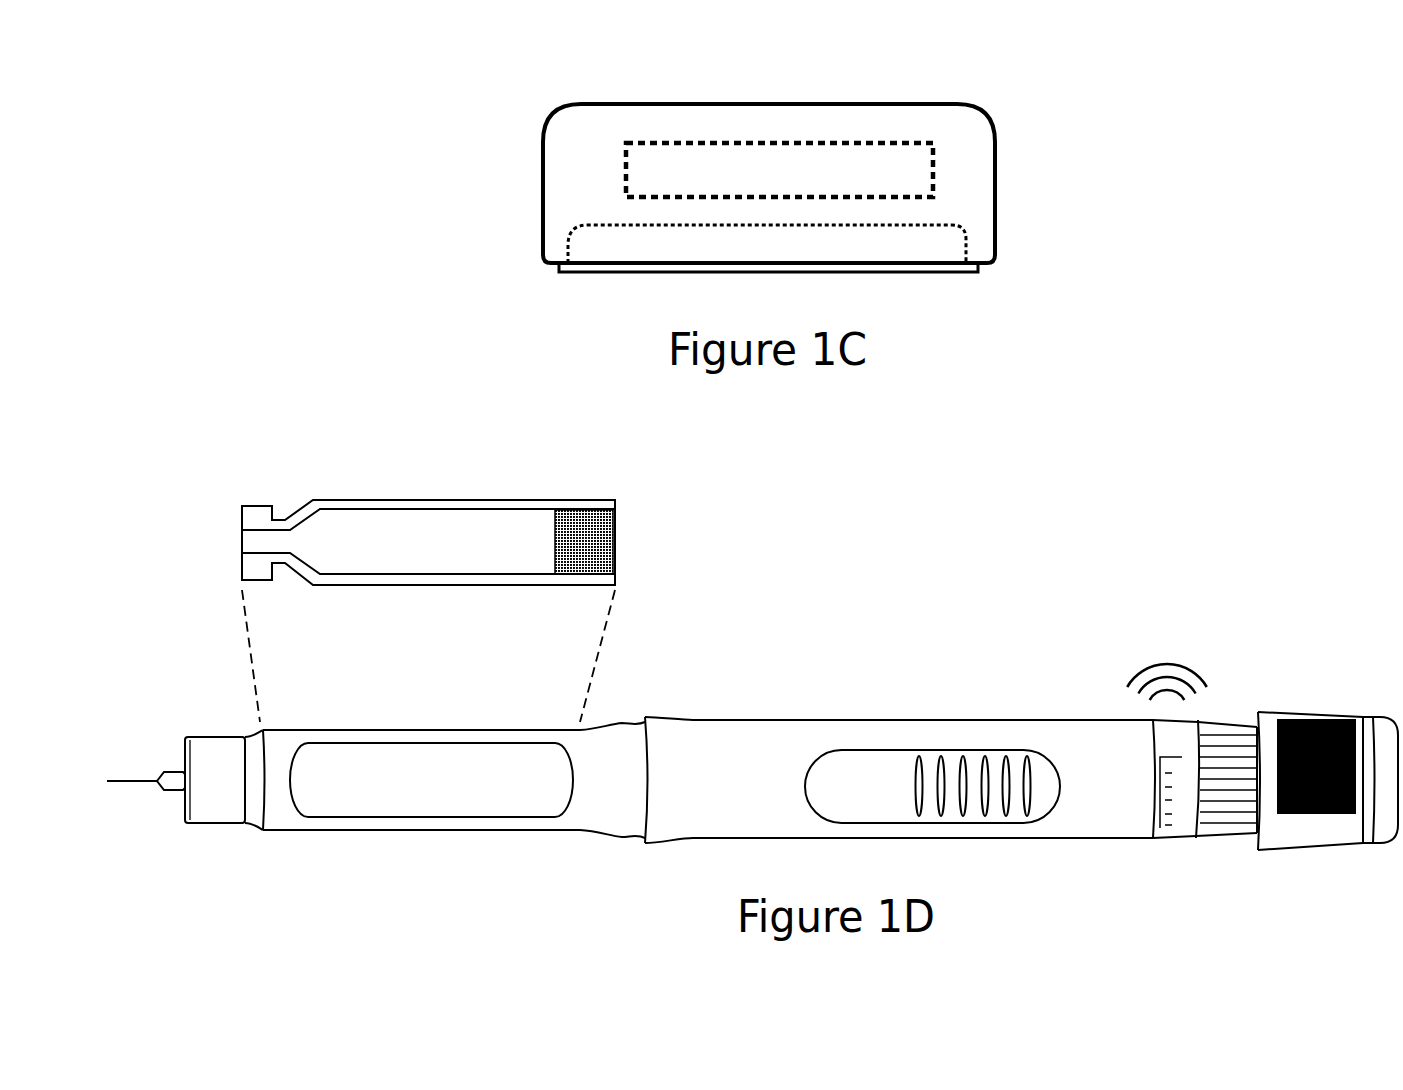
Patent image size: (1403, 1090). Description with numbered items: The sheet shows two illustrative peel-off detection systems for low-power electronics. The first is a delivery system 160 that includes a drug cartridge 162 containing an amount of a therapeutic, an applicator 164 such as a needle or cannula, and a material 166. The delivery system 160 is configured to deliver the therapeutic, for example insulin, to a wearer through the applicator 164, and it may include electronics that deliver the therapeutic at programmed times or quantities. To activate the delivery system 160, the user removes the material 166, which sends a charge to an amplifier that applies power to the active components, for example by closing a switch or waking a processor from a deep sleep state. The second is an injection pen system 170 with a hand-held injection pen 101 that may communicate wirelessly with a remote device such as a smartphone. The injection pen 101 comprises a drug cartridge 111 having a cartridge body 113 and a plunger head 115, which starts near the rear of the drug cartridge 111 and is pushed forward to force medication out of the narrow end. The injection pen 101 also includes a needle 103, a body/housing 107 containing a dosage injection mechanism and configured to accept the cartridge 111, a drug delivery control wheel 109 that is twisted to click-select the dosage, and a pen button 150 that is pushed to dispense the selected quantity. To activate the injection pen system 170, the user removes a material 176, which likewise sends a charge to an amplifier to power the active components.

In FIG. 1C, the delivery system 160 is at (848, 172).
In FIG. 1C, the drug cartridge 162 is at (662, 265).
In FIG. 1C, the applicator 164 is at (993, 260).
In FIG. 1C, the material 166 is at (933, 172).
In FIG. 1D, the injection pen system 170 is at (410, 577).
In FIG. 1D, the drug cartridge 111 is at (479, 491).
In FIG. 1D, the cartridge body 113 is at (400, 505).
In FIG. 1D, the plunger head 115 is at (607, 559).
In FIG. 1D, the injection pen 101 is at (752, 764).
In FIG. 1D, the needle 103 is at (215, 747).
In FIG. 1D, the body/housing 107 is at (763, 823).
In FIG. 1D, the drug delivery control wheel 109 is at (1210, 820).
In FIG. 1D, the pen button 150 is at (1328, 788).
In FIG. 1D, the material 176 is at (1327, 720).